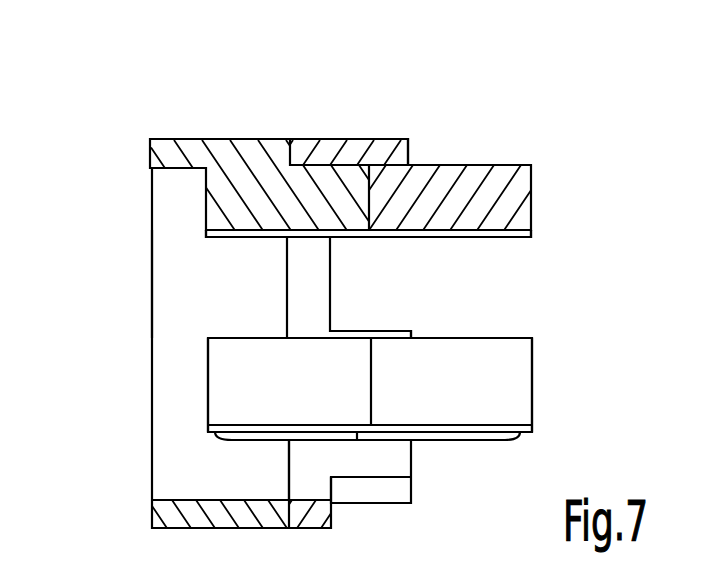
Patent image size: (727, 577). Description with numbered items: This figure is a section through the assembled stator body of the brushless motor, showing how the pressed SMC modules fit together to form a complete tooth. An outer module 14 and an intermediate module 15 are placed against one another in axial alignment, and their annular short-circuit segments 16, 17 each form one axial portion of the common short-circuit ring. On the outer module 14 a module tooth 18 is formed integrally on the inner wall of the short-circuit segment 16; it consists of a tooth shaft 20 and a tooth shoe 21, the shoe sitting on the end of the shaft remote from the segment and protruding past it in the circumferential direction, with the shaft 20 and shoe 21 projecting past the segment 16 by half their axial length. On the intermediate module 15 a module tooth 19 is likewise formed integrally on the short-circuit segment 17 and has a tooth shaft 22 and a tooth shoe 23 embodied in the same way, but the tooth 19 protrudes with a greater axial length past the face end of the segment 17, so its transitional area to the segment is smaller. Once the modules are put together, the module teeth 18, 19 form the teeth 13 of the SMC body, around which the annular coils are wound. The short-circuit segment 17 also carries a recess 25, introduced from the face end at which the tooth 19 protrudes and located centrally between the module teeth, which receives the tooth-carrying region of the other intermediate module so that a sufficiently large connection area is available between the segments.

The teeth 13 is at (380, 241).
The outer module 14 is at (166, 127).
The intermediate module 15 is at (394, 120).
The short-circuit segment 16 is at (230, 158).
The short-circuit segment 17 is at (343, 137).
The module tooth 18 is at (210, 249).
The module tooth 19 is at (528, 242).
The tooth shaft 20 is at (334, 215).
The tooth shoe 21 is at (272, 237).
The tooth shaft 22 is at (503, 186).
The tooth shoe 23 is at (445, 232).
The recess 25 is at (333, 302).